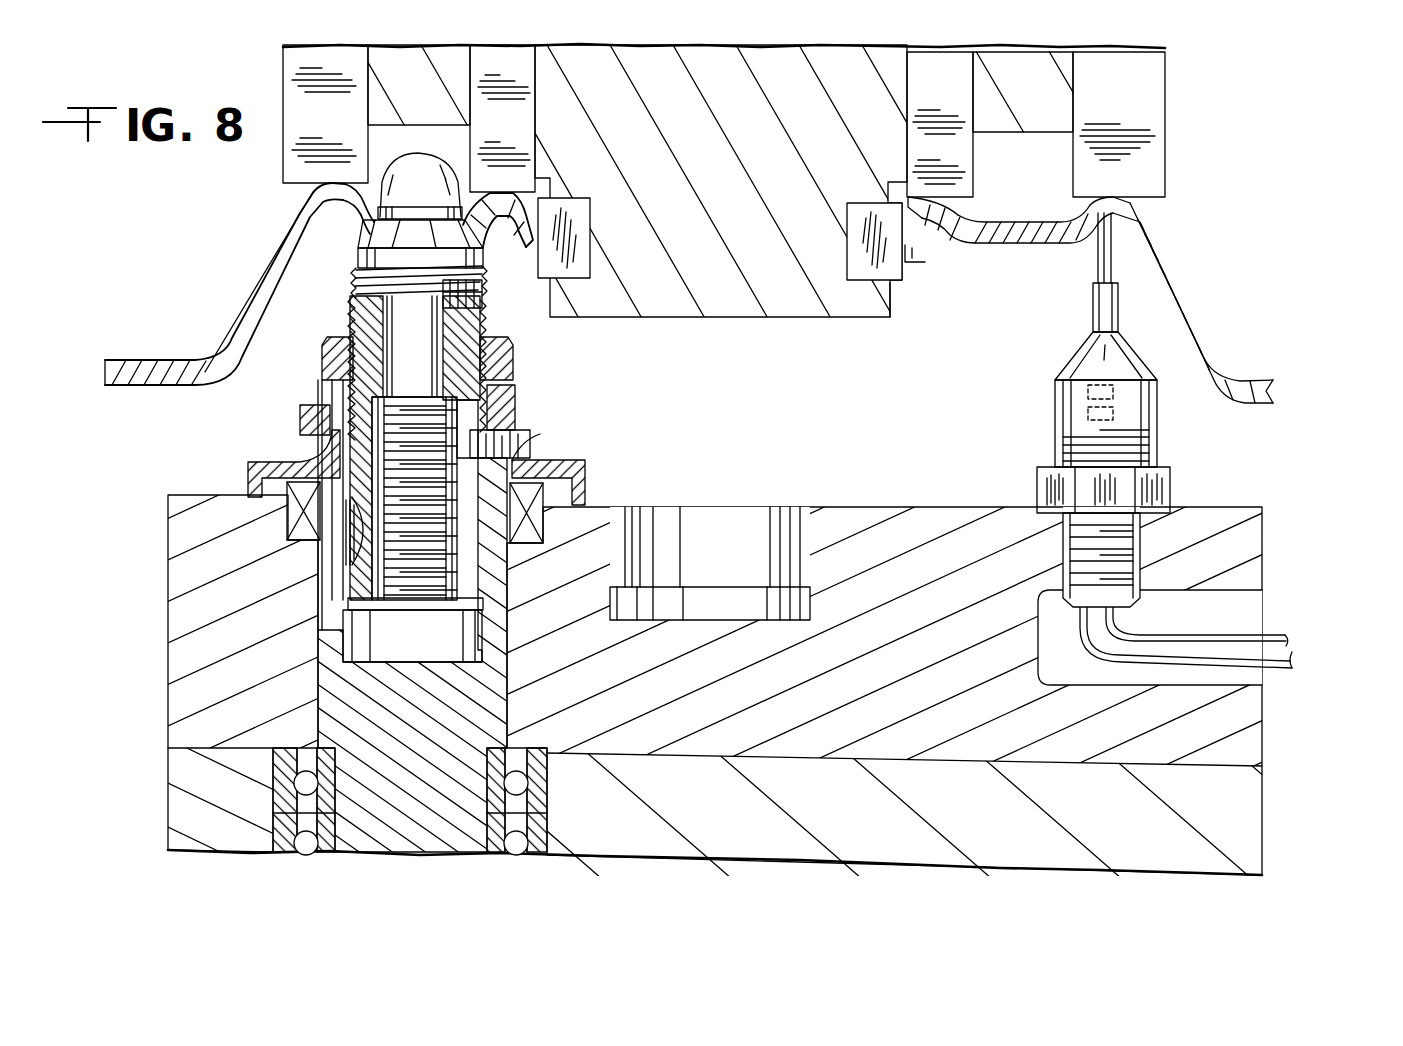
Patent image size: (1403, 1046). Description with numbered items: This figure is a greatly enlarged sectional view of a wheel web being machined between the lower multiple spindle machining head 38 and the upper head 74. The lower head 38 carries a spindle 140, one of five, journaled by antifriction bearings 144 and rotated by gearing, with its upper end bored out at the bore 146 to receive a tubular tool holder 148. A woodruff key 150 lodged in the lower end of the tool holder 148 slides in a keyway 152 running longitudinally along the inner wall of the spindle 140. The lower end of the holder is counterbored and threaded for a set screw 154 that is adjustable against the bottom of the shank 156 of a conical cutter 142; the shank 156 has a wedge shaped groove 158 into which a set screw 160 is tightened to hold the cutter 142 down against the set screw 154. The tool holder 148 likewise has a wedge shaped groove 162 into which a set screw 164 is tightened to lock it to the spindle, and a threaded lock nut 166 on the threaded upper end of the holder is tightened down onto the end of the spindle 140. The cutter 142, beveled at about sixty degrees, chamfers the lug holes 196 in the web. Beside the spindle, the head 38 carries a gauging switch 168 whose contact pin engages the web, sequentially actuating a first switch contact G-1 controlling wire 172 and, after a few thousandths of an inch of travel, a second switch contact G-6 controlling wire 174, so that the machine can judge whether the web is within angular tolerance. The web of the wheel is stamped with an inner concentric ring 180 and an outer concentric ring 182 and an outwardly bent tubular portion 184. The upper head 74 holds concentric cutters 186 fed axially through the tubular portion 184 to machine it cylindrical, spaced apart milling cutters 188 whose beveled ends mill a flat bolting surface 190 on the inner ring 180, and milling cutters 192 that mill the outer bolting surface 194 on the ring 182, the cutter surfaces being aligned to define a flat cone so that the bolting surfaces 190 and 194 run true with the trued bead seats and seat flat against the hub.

The multiple spindle machining head 38 is at (160, 650).
The upper head 74 is at (757, 135).
The spindle 140 is at (417, 772).
The conical cutter 142 is at (360, 233).
The antifriction bearings 144 is at (275, 797).
The bore 146 is at (480, 607).
The tubular tool holder 148 is at (365, 291).
The woodruff key 150 is at (352, 548).
The keyway 152 is at (338, 450).
The set screw 154 is at (375, 416).
The shank 156 is at (440, 352).
The wedge shaped groove 158 is at (444, 320).
The set screw 160 is at (466, 300).
The wedge shaped groove 162 is at (477, 415).
The set screw 164 is at (520, 460).
The threaded lock nut 166 is at (510, 355).
The gauging switch 168 is at (1055, 400).
The wire 172 is at (1302, 643).
The wire 174 is at (1297, 663).
The inner concentric ring 180 is at (950, 222).
The outer concentric ring 182 is at (1135, 218).
The tubular portion 184 is at (907, 250).
The concentric cutters 186 is at (885, 263).
The milling cutters 188 is at (962, 98).
The flat bolting surface 190 is at (938, 194).
The milling cutters 192 is at (1140, 97).
The outer bolting surface 194 is at (1113, 193).
The lug holes 196 is at (390, 208).
The first switch contact G-1 is at (1120, 395).
The second switch contact G-6 is at (1122, 418).
The wafer W is at (1202, 322).